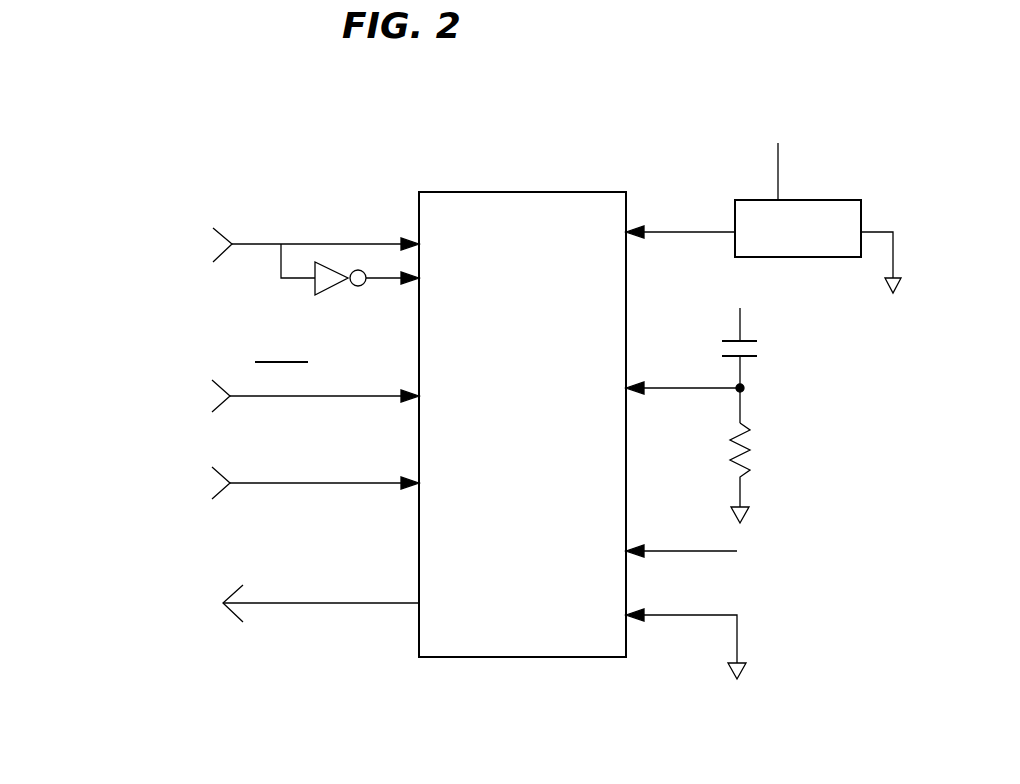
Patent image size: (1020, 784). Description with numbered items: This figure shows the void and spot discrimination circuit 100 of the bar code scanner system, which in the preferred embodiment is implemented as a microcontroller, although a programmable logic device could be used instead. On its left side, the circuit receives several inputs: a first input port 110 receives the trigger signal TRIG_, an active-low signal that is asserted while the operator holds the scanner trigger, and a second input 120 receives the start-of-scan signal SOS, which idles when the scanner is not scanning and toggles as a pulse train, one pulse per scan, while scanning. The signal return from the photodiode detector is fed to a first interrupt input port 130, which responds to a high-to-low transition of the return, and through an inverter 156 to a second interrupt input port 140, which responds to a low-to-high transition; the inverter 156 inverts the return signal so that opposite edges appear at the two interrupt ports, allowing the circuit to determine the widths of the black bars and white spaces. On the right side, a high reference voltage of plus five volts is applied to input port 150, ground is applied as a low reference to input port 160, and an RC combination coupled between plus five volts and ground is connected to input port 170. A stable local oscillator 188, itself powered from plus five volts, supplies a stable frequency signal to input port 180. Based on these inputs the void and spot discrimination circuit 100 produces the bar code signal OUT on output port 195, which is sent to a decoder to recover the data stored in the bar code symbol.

The void and spot discrimination circuit 100 is at (522, 381).
The first input port 110 is at (315, 413).
The second input 120 is at (315, 503).
The first interrupt input port 130 is at (223, 229).
The second interrupt input port 140 is at (392, 305).
The input port 150 is at (702, 528).
The inverter 156 is at (323, 296).
The input port 160 is at (686, 644).
The input port 170 is at (704, 404).
The input port 180 is at (680, 206).
The stable local oscillator 188 is at (818, 221).
The output port 195 is at (255, 628).